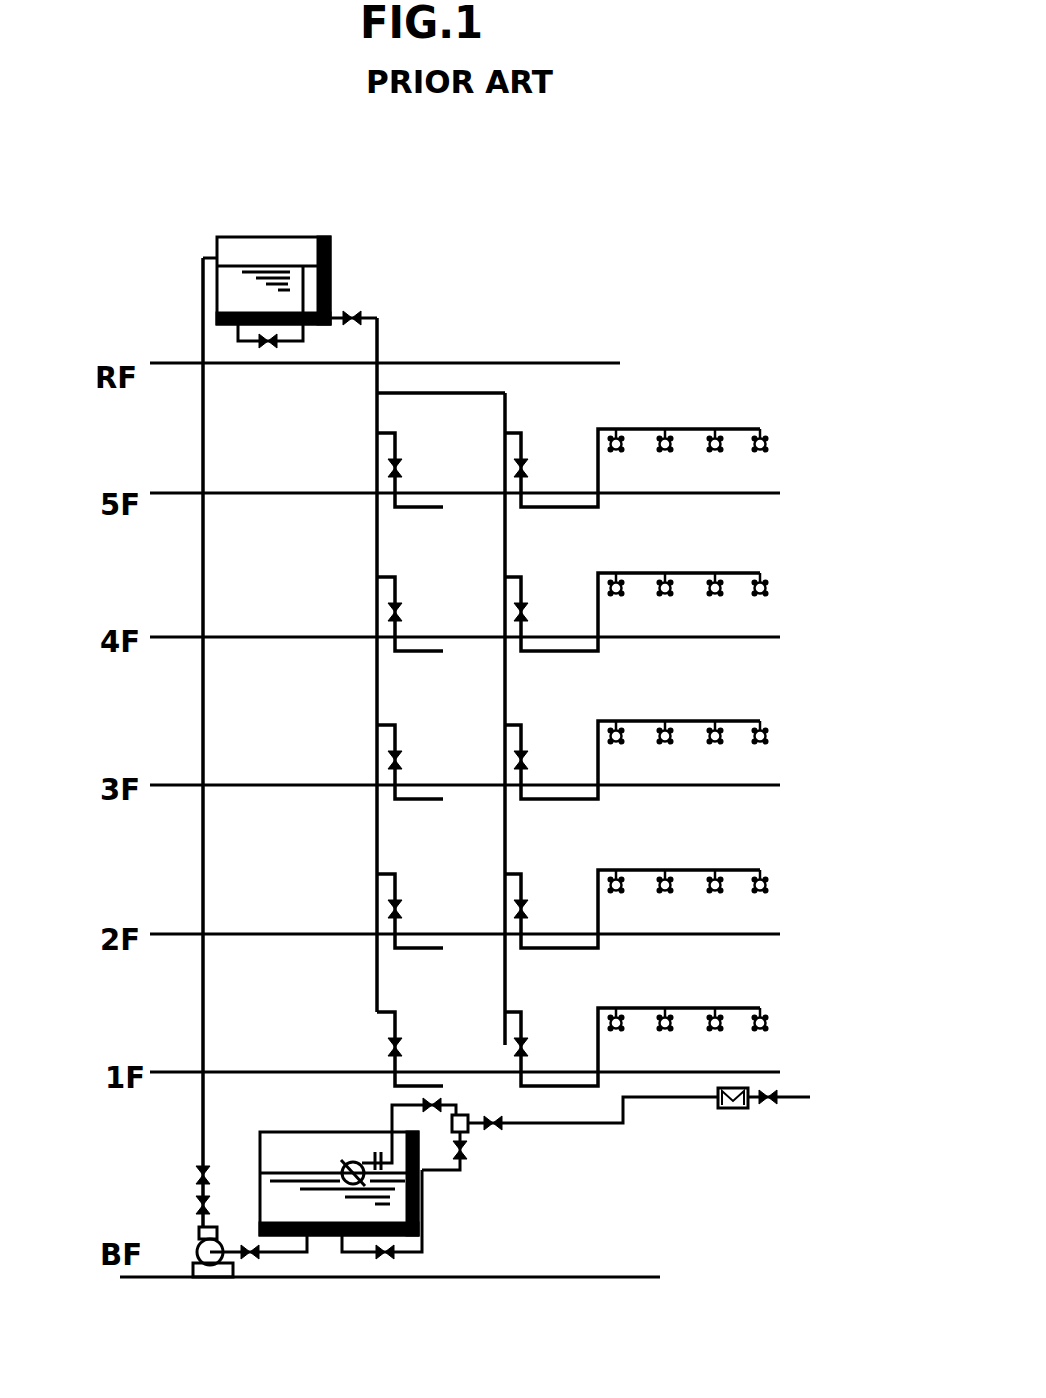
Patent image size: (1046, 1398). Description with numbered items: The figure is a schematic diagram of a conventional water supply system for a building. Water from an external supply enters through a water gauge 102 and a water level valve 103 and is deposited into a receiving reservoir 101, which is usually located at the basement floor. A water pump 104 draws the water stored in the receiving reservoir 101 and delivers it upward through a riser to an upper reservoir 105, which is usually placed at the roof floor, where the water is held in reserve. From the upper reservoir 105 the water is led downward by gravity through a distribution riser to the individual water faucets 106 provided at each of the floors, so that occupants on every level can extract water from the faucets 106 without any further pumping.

The receiving reservoir 101 is at (410, 1235).
The water gauge 102 is at (731, 1108).
The water level valve 103 is at (468, 1130).
The water pump 104 is at (193, 1268).
The upper reservoir 105 is at (252, 237).
The water faucets 106 is at (766, 448).